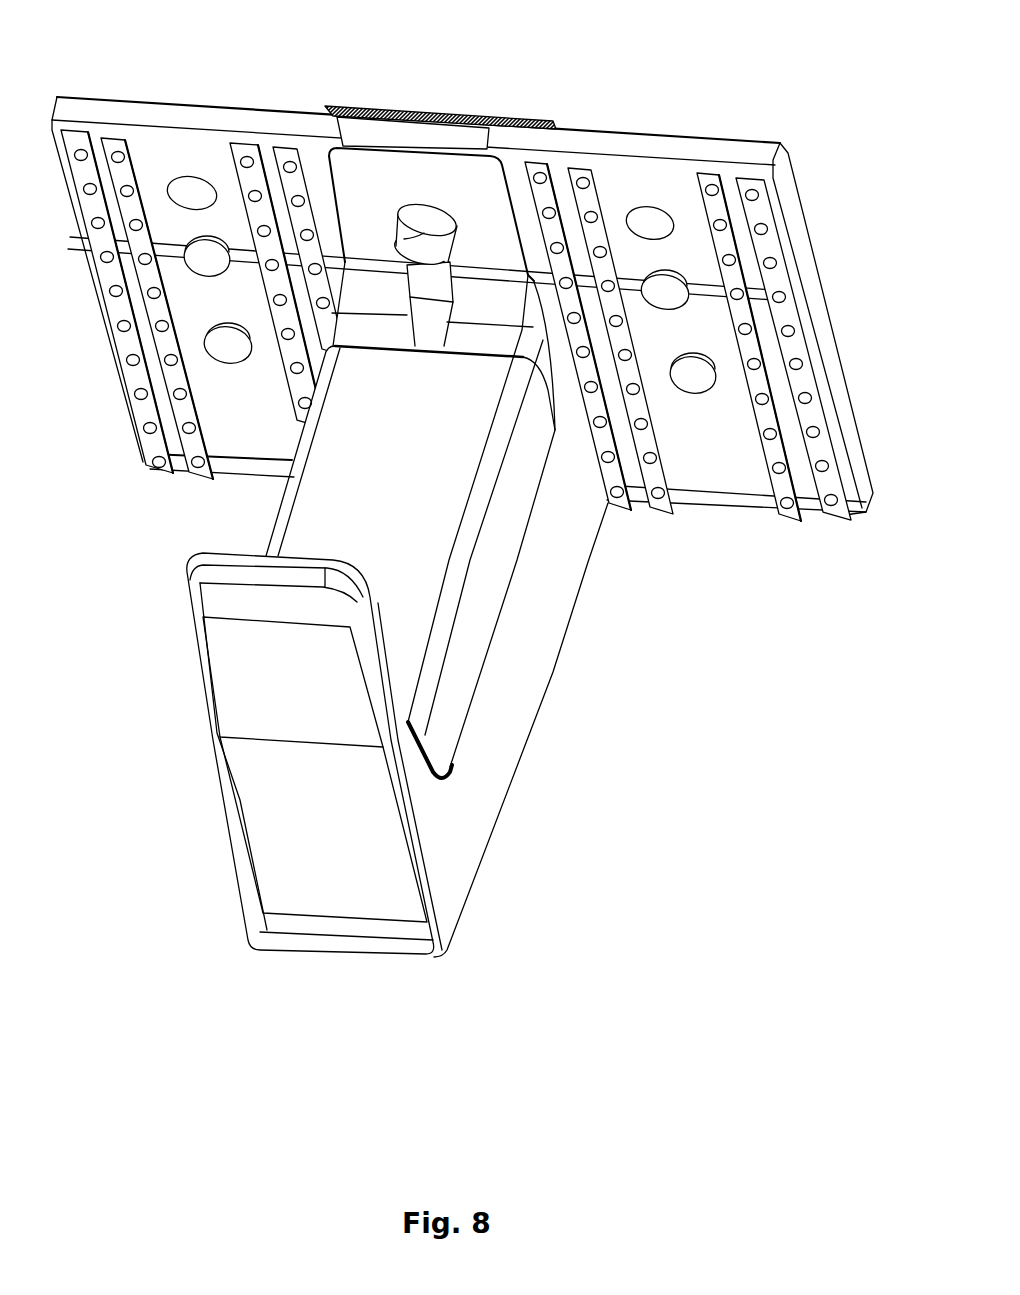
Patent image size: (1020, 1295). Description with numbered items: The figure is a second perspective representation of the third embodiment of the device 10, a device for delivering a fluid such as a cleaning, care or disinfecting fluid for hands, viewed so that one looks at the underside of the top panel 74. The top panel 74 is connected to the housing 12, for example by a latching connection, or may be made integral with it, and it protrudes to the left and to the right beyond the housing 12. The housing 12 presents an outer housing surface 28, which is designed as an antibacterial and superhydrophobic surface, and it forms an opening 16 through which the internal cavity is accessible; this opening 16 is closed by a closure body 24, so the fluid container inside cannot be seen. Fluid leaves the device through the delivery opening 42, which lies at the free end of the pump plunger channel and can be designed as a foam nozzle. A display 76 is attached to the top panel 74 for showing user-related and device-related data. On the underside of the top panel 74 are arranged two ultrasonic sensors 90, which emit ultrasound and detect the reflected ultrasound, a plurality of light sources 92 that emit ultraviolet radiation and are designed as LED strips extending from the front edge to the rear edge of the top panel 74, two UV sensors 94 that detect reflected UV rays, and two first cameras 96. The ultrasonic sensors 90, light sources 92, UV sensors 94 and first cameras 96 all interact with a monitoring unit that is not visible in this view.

The device 10 is at (764, 105).
The housing 12 is at (545, 656).
The outer housing surface 28 is at (521, 730).
The opening 16 is at (494, 737).
The closure body 24 is at (298, 499).
The delivery opening 42 is at (410, 243).
The top panel 74 is at (186, 115).
The display 76 is at (550, 118).
The ultrasonic sensors 90 is at (178, 182).
The light sources 92 is at (793, 510).
The UV sensors 94 is at (203, 262).
The first cameras 96 is at (218, 348).